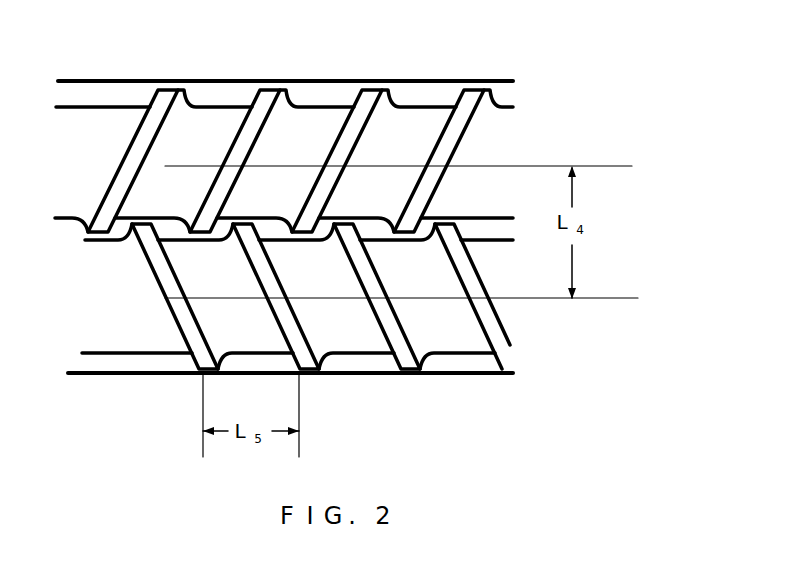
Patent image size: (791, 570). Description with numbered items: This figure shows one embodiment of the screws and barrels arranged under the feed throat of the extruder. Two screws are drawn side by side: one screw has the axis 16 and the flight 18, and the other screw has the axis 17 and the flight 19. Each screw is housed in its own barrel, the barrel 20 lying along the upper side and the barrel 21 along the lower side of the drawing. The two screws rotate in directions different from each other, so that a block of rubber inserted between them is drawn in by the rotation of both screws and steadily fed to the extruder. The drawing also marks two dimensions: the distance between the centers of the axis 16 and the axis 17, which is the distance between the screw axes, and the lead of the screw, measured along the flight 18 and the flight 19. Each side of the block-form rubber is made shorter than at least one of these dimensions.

The axis of the screw 16 is at (417, 120).
The axis of the screw 17 is at (455, 333).
The flight of the screw 18 is at (482, 134).
The flight of the screw 19 is at (518, 322).
The barrel 20 is at (221, 70).
The barrel 21 is at (82, 384).